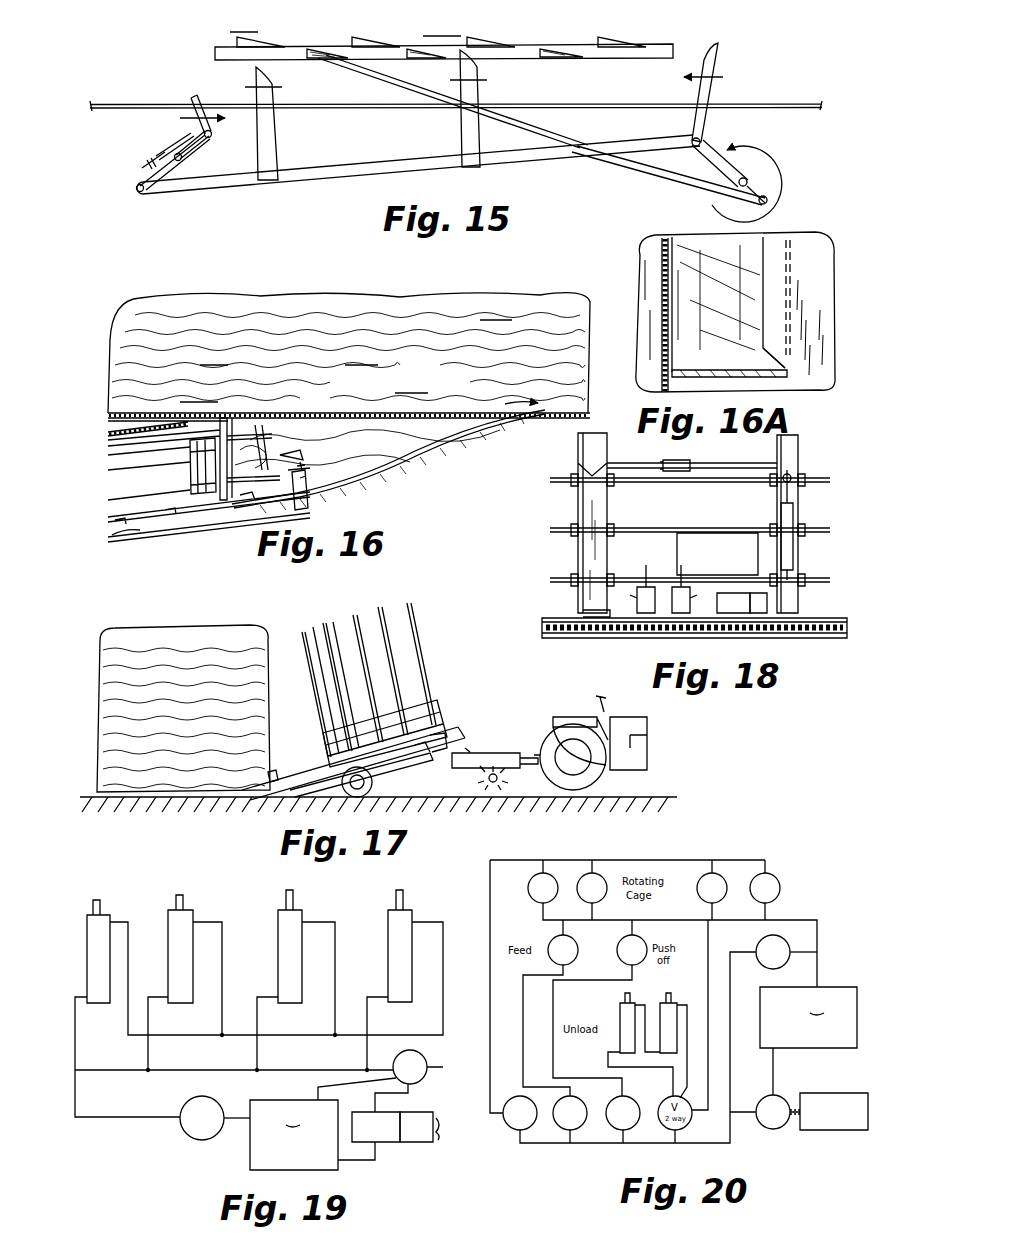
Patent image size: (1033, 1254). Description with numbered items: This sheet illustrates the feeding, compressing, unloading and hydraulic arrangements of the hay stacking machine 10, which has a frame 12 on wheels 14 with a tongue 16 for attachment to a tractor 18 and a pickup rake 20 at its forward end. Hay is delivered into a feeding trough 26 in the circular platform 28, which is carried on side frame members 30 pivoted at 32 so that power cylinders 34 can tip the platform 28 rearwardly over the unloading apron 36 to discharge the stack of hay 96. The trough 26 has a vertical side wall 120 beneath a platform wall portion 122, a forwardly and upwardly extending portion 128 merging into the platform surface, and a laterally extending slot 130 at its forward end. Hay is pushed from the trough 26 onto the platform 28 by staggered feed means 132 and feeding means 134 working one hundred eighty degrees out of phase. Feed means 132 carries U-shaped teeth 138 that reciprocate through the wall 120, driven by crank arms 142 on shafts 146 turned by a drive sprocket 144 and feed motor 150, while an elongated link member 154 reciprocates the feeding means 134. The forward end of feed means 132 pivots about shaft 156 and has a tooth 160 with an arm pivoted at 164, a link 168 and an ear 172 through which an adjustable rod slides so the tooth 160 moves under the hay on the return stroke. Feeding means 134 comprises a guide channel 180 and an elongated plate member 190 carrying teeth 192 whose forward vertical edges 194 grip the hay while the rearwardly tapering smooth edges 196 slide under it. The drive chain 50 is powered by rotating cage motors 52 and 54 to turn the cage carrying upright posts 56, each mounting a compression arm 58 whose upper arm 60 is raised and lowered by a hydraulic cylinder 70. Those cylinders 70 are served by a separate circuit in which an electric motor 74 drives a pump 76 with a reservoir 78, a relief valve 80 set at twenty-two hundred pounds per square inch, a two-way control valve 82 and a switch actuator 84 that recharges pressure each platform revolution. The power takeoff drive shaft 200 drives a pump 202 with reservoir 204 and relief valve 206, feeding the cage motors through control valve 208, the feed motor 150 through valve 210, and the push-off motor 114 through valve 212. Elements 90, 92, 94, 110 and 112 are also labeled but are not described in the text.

In FIG. 17, the hay stacking machine 10 is at (420, 610).
In FIG. 17, the frame 12 is at (498, 752).
In FIG. 17, the wheels 14 is at (372, 792).
In FIG. 17, the tongue 16 is at (545, 766).
In FIG. 17, the tractor 18 is at (575, 722).
In FIG. 20, the tractor 18 is at (844, 1093).
In FIG. 17, the pickup rake 20 is at (497, 782).
In FIG. 16A, the feeding trough 26 is at (722, 295).
In FIG. 16, the feeding trough 26 is at (413, 427).
In FIG. 16A, the platform 28 is at (736, 317).
In FIG. 17, the platform 28 is at (305, 770).
In FIG. 17, the side frame members 30 is at (425, 765).
In FIG. 17, the pivot 32 is at (373, 778).
In FIG. 20, the power cylinders 34 is at (622, 1010).
In FIG. 17, the unloading apron 36 is at (258, 797).
In FIG. 18, the drive chain 50 is at (545, 626).
In FIG. 20, the hydraulic motors 52 is at (586, 876).
In FIG. 20, the drive motors 54 is at (760, 873).
In FIG. 17, the upright posts 56 is at (440, 706).
In FIG. 18, the compression arm 58 is at (576, 441).
In FIG. 17, the compression arm 58 is at (420, 644).
In FIG. 18, the upper arm 60 is at (578, 453).
In FIG. 17, the upper arm 60 is at (375, 605).
In FIG. 18, the hydraulic cylinder 70 is at (796, 520).
In FIG. 19, the hydraulic cylinder 70 is at (90, 925).
In FIG. 18, the electric motor 74 is at (770, 603).
In FIG. 19, the electric motor 74 is at (425, 1143).
In FIG. 18, the pump 76 is at (733, 615).
In FIG. 19, the pump 76 is at (385, 1143).
In FIG. 18, the reservoir 78 is at (685, 548).
In FIG. 19, the reservoir 78 is at (312, 1135).
In FIG. 19, the relief valve 80 is at (188, 1105).
In FIG. 19, the two-way control valve 82 is at (425, 1058).
In FIG. 18, the switch actuator 84 is at (652, 613).
In FIG. 18, the rod 90 is at (733, 462).
In FIG. 18, the cylinder 92 is at (690, 461).
In FIG. 18, the cross rods 94 is at (828, 478).
In FIG. 16, the hay 96 is at (333, 295).
In FIG. 17, the hay 96 is at (240, 635).
In FIG. 17, the bracket 110 is at (276, 772).
In FIG. 16A, the chain 112 is at (662, 262).
In FIG. 20, the push-off motor 114 is at (645, 942).
In FIG. 15, the vertical side wall 120 is at (775, 99).
In FIG. 16A, the vertical side wall 120 is at (787, 353).
In FIG. 16, the vertical side wall 120 is at (255, 404).
In FIG. 16A, the platform wall portion 122 is at (775, 256).
In FIG. 16, the platform wall portion 122 is at (318, 404).
In FIG. 16A, the forwardly and upwardly extending portion 128 is at (729, 371).
In FIG. 16A, the laterally extending slot 130 is at (768, 358).
In FIG. 15, the feed means 132 is at (318, 185).
In FIG. 16, the feed means 132 is at (284, 453).
In FIG. 15, the feeding means 134 is at (540, 36).
In FIG. 16, the feeding means 134 is at (392, 453).
In FIG. 15, the U-shaped teeth 138 is at (278, 138).
In FIG. 16, the U-shaped teeth 138 is at (265, 477).
In FIG. 15, the crank arms 142 is at (778, 160).
In FIG. 16, the crank arms 142 is at (190, 462).
In FIG. 16, the drive sprocket 144 is at (108, 430).
In FIG. 16, the shafts 146 is at (172, 520).
In FIG. 20, the feed motor 150 is at (577, 945).
In FIG. 15, the elongated link member 154 is at (562, 128).
In FIG. 15, the shaft 156 is at (186, 160).
In FIG. 15, the tooth 160 is at (196, 102).
In FIG. 15, the pivot 164 is at (214, 138).
In FIG. 15, the link 168 is at (160, 156).
In FIG. 15, the ear 172 is at (142, 165).
In FIG. 16, the guide channel 180 is at (308, 505).
In FIG. 15, the elongated plate member 190 is at (661, 45).
In FIG. 15, the teeth 192 is at (378, 40).
In FIG. 16, the teeth 192 is at (325, 492).
In FIG. 15, the forward vertical edges 194 is at (348, 37).
In FIG. 15, the rearwardly tapering smooth edges 196 is at (366, 36).
In FIG. 17, the power takeoff drive shaft 200 is at (530, 757).
In FIG. 20, the pump 202 is at (780, 1096).
In FIG. 20, the reservoir 204 is at (808, 1017).
In FIG. 20, the relief valve 206 is at (790, 948).
In FIG. 20, the control valve 208 is at (510, 1125).
In FIG. 20, the valve 210 is at (562, 1128).
In FIG. 20, the valve 212 is at (616, 1128).